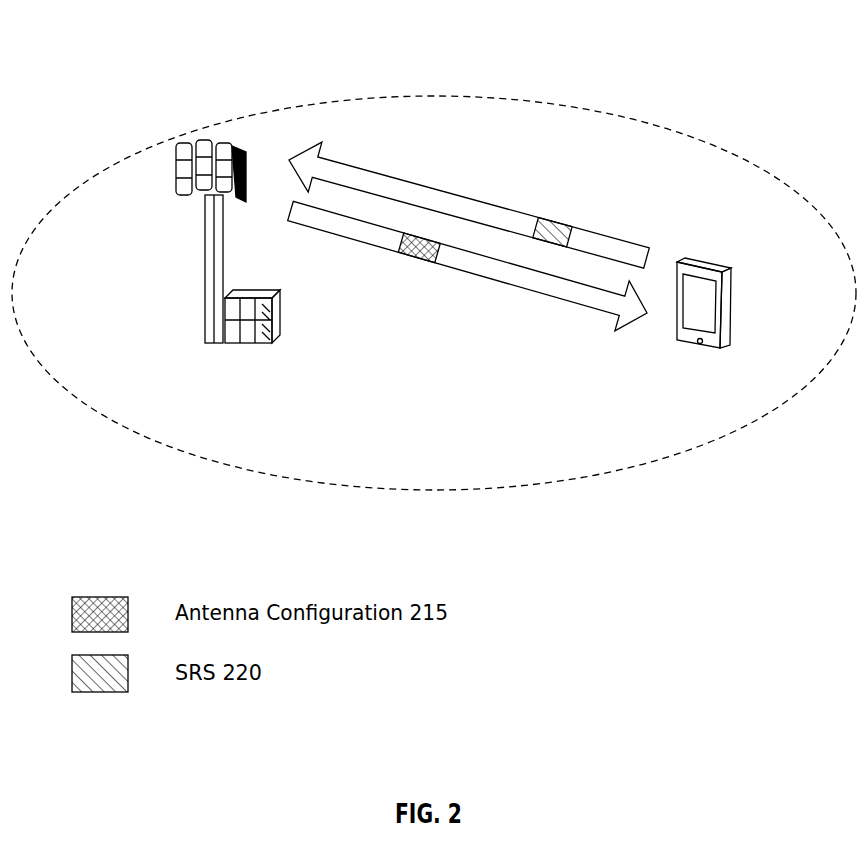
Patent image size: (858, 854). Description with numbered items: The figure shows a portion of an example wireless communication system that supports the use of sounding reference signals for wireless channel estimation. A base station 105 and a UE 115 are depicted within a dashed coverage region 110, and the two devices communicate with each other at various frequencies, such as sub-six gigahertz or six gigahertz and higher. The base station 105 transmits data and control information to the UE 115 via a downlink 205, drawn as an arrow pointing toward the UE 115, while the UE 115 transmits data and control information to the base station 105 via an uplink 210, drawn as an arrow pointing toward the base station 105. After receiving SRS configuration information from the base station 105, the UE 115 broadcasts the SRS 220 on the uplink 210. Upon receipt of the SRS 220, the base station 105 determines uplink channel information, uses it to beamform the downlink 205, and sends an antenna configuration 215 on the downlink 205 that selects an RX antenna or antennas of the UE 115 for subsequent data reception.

The base station 105 is at (245, 347).
The coverage area 110 is at (218, 462).
The UE 115 is at (732, 327).
The downlink 205 is at (477, 273).
The uplink 210 is at (415, 183).
The antenna configuration 215 is at (415, 258).
The SRS 220 is at (565, 223).